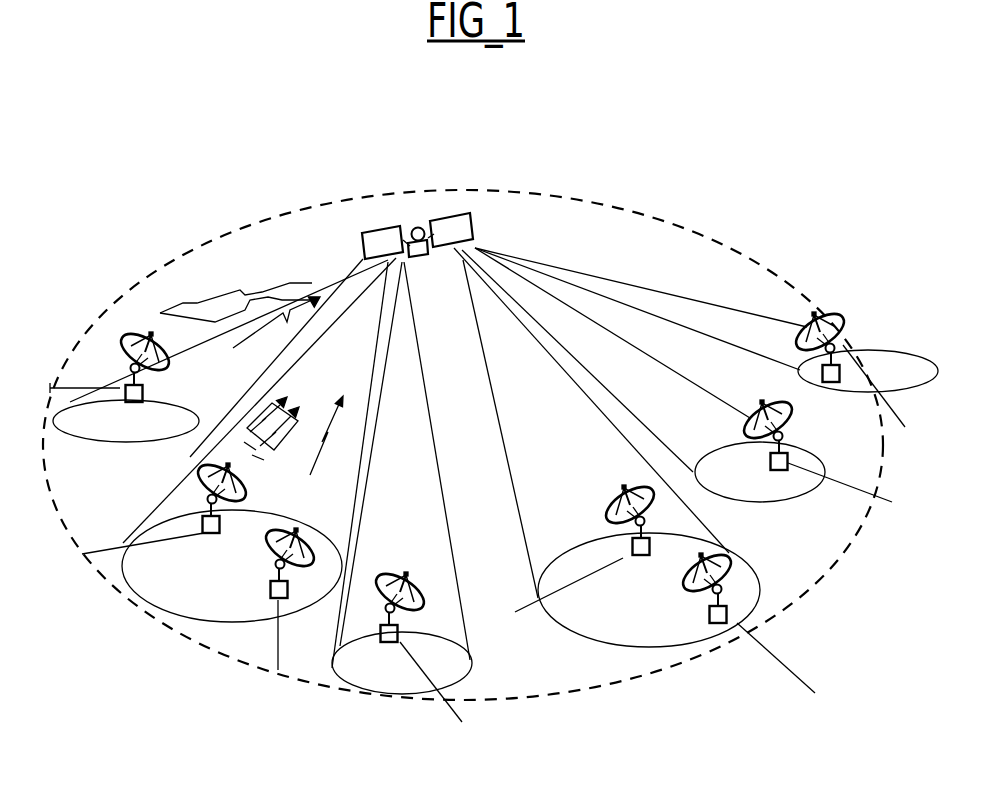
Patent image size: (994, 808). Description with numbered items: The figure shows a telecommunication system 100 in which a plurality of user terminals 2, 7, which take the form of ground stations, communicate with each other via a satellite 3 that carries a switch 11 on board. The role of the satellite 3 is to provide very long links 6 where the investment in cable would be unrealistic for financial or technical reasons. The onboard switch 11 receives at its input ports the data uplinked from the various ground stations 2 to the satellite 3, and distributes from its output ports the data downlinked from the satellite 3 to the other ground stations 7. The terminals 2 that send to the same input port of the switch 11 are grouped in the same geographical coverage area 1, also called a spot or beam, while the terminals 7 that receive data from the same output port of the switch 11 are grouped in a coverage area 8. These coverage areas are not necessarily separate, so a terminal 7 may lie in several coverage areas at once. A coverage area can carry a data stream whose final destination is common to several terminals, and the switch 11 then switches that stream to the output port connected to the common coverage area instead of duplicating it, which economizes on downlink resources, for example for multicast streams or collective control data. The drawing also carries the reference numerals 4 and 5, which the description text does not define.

The telecommunication system 100 is at (455, 144).
The geographical coverage area 1 is at (205, 622).
The user terminal 2 is at (131, 406).
The satellite 3 is at (410, 224).
The transmitted signals 4 is at (258, 412).
The uplink signal 5 is at (287, 378).
The very long link 6 is at (312, 281).
The user terminal 7 is at (831, 383).
The coverage area 8 is at (663, 648).
The switch 11 is at (428, 255).